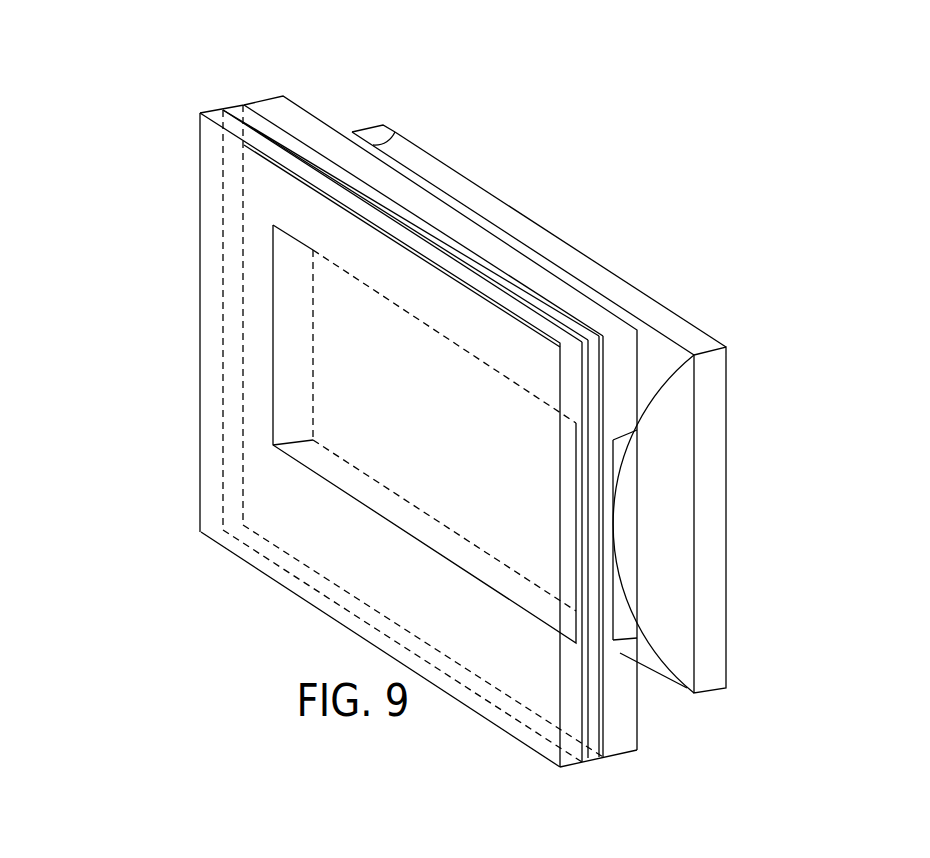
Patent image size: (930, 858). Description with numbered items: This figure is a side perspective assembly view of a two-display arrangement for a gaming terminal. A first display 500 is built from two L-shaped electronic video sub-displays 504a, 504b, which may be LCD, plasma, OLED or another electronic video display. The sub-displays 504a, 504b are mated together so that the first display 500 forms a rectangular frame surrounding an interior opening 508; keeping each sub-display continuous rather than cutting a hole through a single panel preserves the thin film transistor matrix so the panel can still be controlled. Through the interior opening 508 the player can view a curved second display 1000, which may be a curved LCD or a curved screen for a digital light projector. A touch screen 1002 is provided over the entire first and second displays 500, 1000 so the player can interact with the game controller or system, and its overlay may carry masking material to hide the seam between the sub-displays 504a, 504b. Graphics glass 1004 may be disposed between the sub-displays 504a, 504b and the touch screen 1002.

The first display 500 is at (395, 132).
The sub-display 504a is at (283, 96).
The sub-display 504b is at (620, 654).
The interior opening 508 is at (487, 575).
The curved second display 1000 is at (648, 378).
The touch screen 1002 is at (201, 533).
The graphics glass 1004 is at (200, 108).